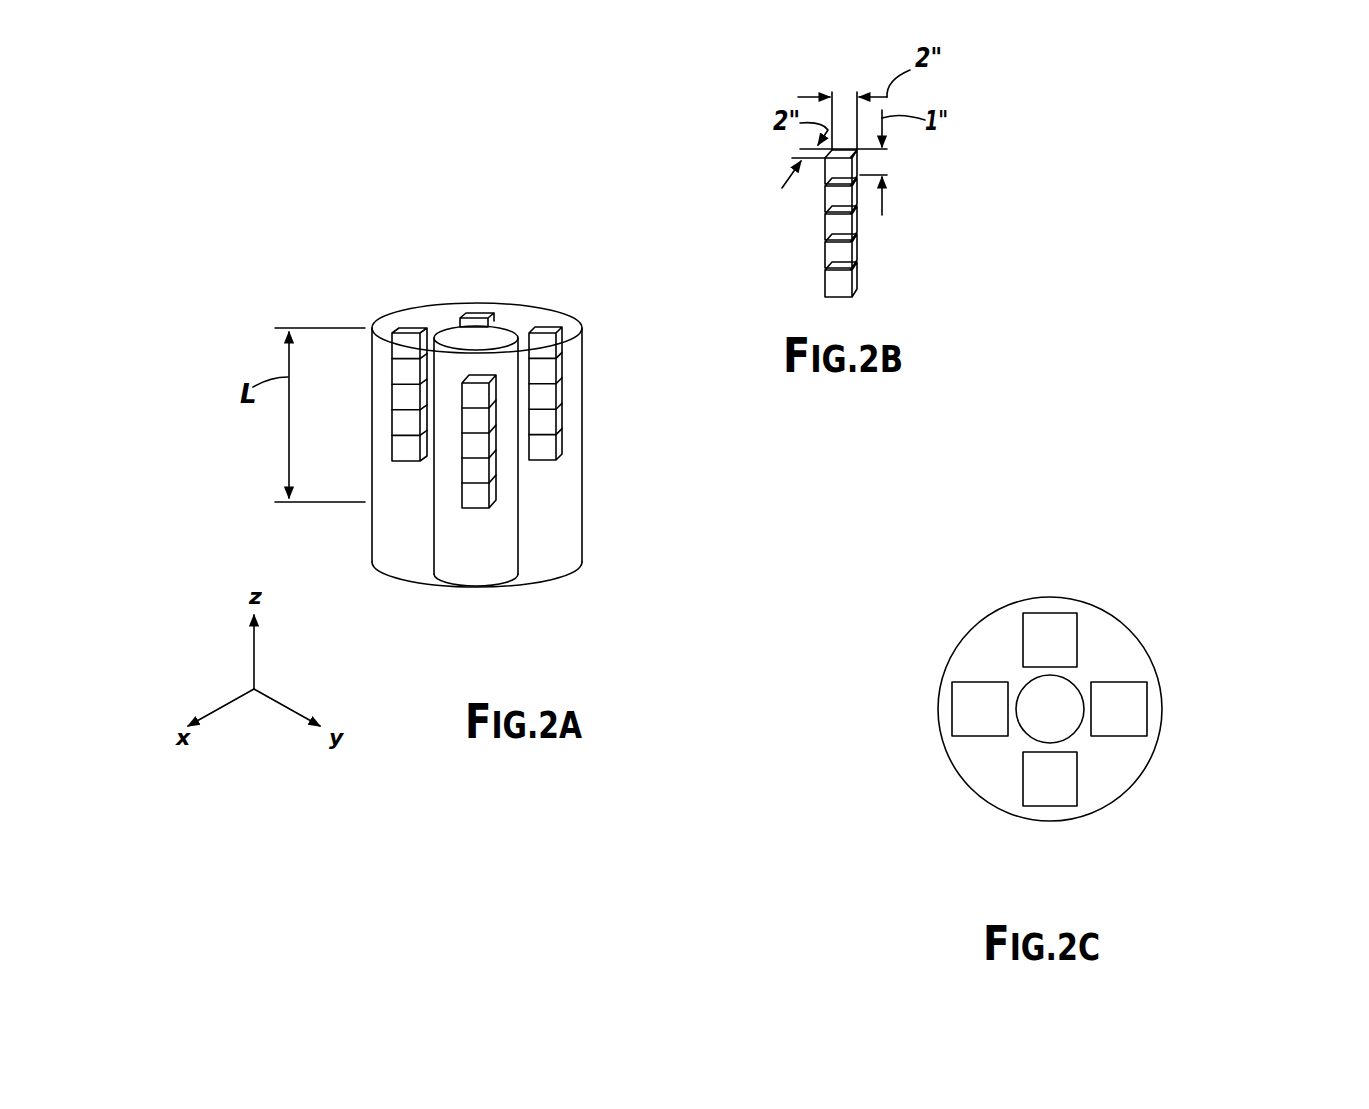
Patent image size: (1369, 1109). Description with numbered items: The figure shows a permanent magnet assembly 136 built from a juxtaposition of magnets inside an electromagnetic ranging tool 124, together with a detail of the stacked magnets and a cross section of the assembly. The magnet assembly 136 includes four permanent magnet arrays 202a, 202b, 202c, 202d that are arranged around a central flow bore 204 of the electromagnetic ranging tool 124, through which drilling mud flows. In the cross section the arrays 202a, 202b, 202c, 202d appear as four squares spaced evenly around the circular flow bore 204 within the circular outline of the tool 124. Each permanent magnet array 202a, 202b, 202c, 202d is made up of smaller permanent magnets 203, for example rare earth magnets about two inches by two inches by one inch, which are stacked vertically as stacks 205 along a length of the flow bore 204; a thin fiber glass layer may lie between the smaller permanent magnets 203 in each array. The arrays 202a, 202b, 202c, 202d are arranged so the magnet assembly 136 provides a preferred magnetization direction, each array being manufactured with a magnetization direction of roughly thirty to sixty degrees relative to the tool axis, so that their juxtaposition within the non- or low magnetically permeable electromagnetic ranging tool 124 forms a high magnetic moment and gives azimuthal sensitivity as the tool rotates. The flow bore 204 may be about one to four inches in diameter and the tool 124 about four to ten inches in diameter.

In FIG. 2A, the electromagnetic ranging tool 124 is at (390, 530).
In FIG. 2C, the electromagnetic ranging tool 124 is at (1108, 638).
In FIG. 2A, the magnet assembly 136 is at (380, 249).
In FIG. 2A, the permanent magnet array 202a is at (483, 313).
In FIG. 2C, the permanent magnet array 202a is at (1045, 612).
In FIG. 2A, the permanent magnet array 202b is at (392, 398).
In FIG. 2C, the permanent magnet array 202b is at (952, 695).
In FIG. 2A, the permanent magnet array 202c is at (473, 508).
In FIG. 2C, the permanent magnet array 202c is at (1048, 806).
In FIG. 2A, the permanent magnet array 202d is at (562, 442).
In FIG. 2C, the permanent magnet array 202d is at (1150, 711).
In FIG. 2A, the smaller permanent magnets 203 is at (487, 419).
In FIG. 2B, the smaller permanent magnets 203 is at (825, 178).
In FIG. 2C, the smaller permanent magnets 203 is at (1059, 702).
In FIG. 2A, the flow bore 204 is at (450, 334).
In FIG. 2C, the flow bore 204 is at (1055, 722).
In FIG. 2B, the stacks 205 is at (847, 223).